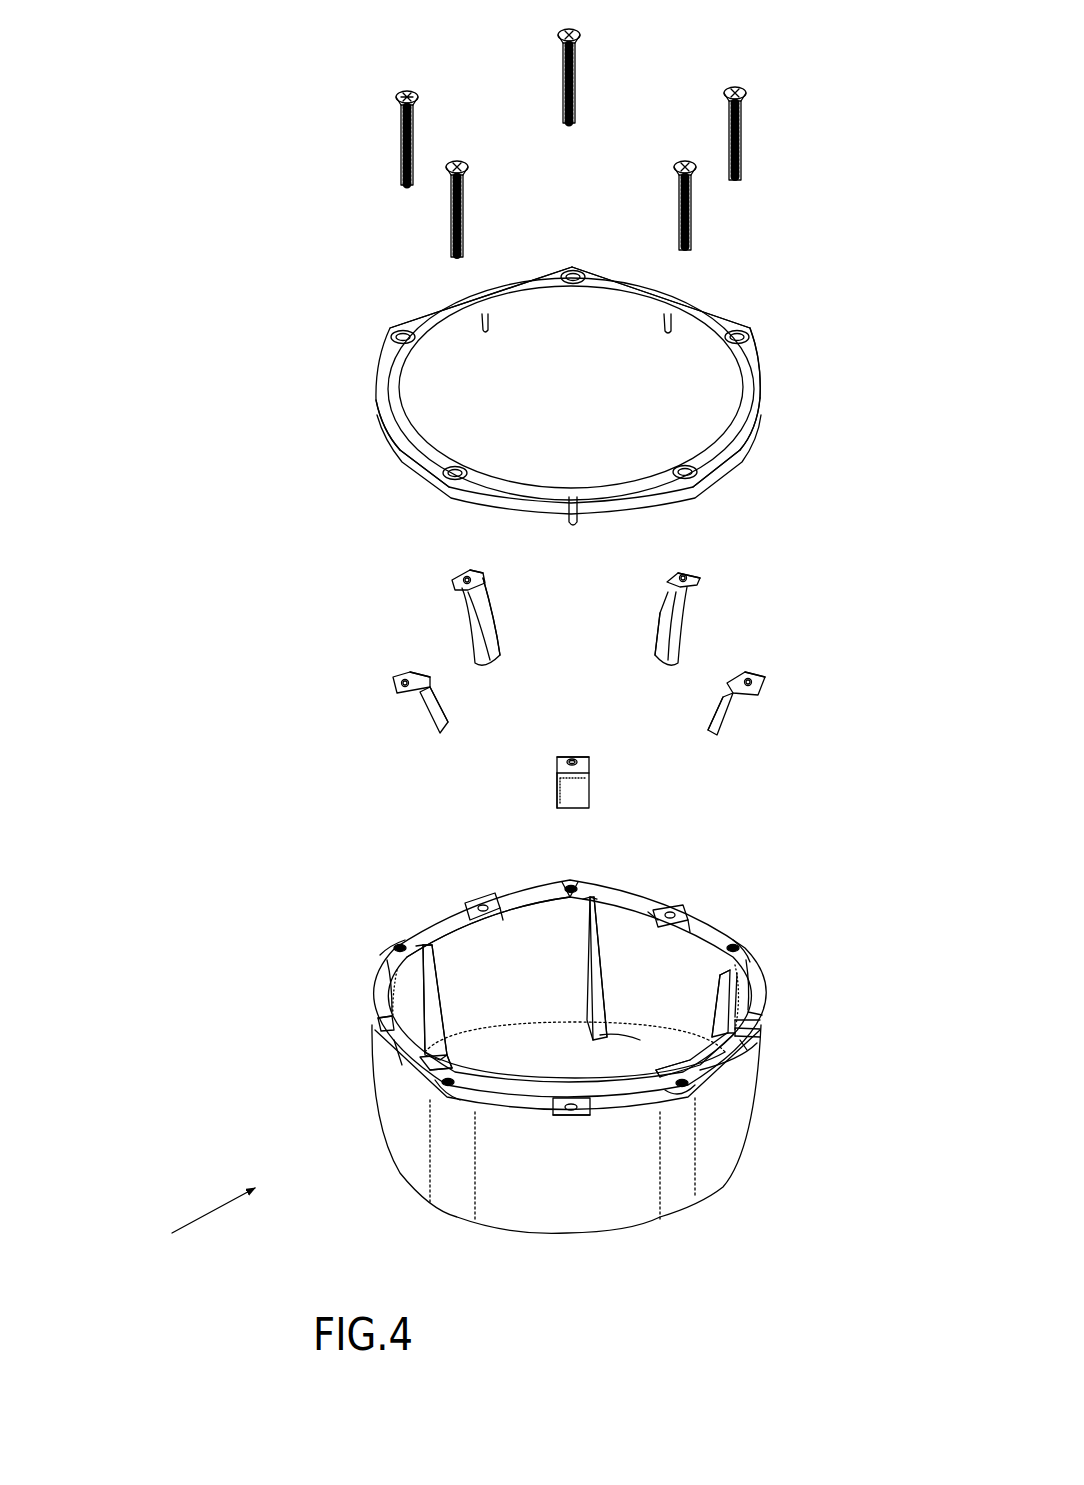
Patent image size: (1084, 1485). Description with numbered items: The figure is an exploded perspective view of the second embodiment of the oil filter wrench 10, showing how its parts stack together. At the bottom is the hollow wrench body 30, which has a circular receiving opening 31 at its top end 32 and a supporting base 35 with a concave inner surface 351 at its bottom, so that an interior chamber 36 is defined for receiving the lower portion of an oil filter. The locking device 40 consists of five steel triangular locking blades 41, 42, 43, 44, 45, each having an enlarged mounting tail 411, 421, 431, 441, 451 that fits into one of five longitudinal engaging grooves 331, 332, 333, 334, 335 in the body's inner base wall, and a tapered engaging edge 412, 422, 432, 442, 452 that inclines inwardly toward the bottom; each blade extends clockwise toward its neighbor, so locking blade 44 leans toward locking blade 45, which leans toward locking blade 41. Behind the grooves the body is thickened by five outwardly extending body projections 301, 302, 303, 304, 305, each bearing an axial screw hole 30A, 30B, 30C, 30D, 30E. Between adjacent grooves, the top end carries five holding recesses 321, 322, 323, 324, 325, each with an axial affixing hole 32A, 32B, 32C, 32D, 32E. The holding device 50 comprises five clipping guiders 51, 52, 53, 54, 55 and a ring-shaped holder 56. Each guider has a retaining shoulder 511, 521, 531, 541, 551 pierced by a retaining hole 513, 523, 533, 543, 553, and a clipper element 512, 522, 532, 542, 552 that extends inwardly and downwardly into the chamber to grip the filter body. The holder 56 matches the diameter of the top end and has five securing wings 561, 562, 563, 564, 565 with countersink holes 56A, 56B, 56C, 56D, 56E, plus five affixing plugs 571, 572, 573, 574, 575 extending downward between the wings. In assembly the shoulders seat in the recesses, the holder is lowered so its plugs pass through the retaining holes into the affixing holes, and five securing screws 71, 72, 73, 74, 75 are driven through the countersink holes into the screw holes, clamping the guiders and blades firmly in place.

The oil filter wrench 10 is at (196, 1225).
The wrench body 30 is at (581, 1056).
The screw hole 30A is at (740, 946).
The screw hole 30B is at (681, 1092).
The screw hole 30C is at (442, 1086).
The screw hole 30D is at (395, 942).
The screw hole 30E is at (572, 885).
The body projection 301 is at (740, 943).
The body projection 302 is at (690, 1092).
The body projection 303 is at (427, 1117).
The body projection 304 is at (390, 945).
The body projection 305 is at (525, 882).
The receiving opening 31 is at (520, 915).
The top end 32 is at (752, 1005).
The affixing hole 32A is at (675, 908).
The affixing hole 32B is at (757, 1030).
The affixing hole 32C is at (580, 1115).
The affixing hole 32D is at (377, 1030).
The affixing hole 32E is at (477, 906).
The holding recess 321 is at (680, 917).
The holding recess 322 is at (757, 1040).
The holding recess 323 is at (560, 1115).
The holding recess 324 is at (375, 1020).
The holding recess 325 is at (492, 892).
The engaging groove 331 is at (750, 957).
The engaging groove 332 is at (617, 1040).
The engaging groove 333 is at (423, 1083).
The engaging groove 334 is at (387, 958).
The engaging groove 335 is at (686, 875).
The supporting base 35 is at (760, 1050).
The concave inner surface 351 is at (578, 1072).
The interior chamber 36 is at (755, 1057).
The locking device 40 is at (608, 955).
The locking blade 41 is at (752, 1003).
The mounting tail 411 is at (721, 970).
The engaging edge 412 is at (716, 1003).
The locking blade 42 is at (740, 1083).
The mounting tail 421 is at (670, 1087).
The engaging edge 422 is at (594, 1093).
The locking blade 43 is at (423, 1078).
The mounting tail 431 is at (460, 1072).
The engaging edge 432 is at (450, 1058).
The locking blade 44 is at (433, 950).
The mounting tail 441 is at (427, 943).
The engaging edge 442 is at (443, 987).
The locking blade 45 is at (580, 938).
The mounting tail 451 is at (581, 907).
The engaging edge 452 is at (598, 975).
The holding device 50 is at (810, 345).
The clipping guider 51 is at (705, 586).
The retaining shoulder 511 is at (683, 573).
The clipper element 512 is at (673, 638).
The retaining hole 513 is at (690, 575).
The clipping guider 52 is at (790, 697).
The retaining shoulder 521 is at (760, 677).
The clipper element 522 is at (723, 718).
The retaining hole 523 is at (763, 681).
The clipping guider 53 is at (618, 761).
The retaining shoulder 531 is at (562, 757).
The clipper element 532 is at (573, 795).
The retaining hole 533 is at (580, 758).
The clipping guider 54 is at (392, 702).
The retaining shoulder 541 is at (403, 678).
The clipper element 542 is at (440, 720).
The retaining hole 543 is at (398, 682).
The clipping guider 55 is at (487, 586).
The retaining shoulder 551 is at (472, 569).
The clipper element 552 is at (485, 628).
The retaining hole 553 is at (464, 576).
The holder 56 is at (569, 357).
The countersink hole 56A is at (739, 330).
The countersink hole 56B is at (686, 466).
The countersink hole 56C is at (458, 467).
The countersink hole 56D is at (403, 330).
The countersink hole 56E is at (574, 270).
The securing wing 561 is at (752, 340).
The securing wing 562 is at (738, 458).
The securing wing 563 is at (449, 474).
The securing wing 564 is at (388, 340).
The securing wing 565 is at (588, 274).
The affixing plug 571 is at (753, 435).
The affixing plug 572 is at (573, 505).
The affixing plug 573 is at (387, 443).
The affixing plug 574 is at (489, 316).
The affixing plug 575 is at (670, 322).
The securing screw 71 is at (743, 122).
The securing screw 72 is at (678, 213).
The securing screw 73 is at (463, 192).
The securing screw 74 is at (402, 147).
The securing screw 75 is at (564, 57).